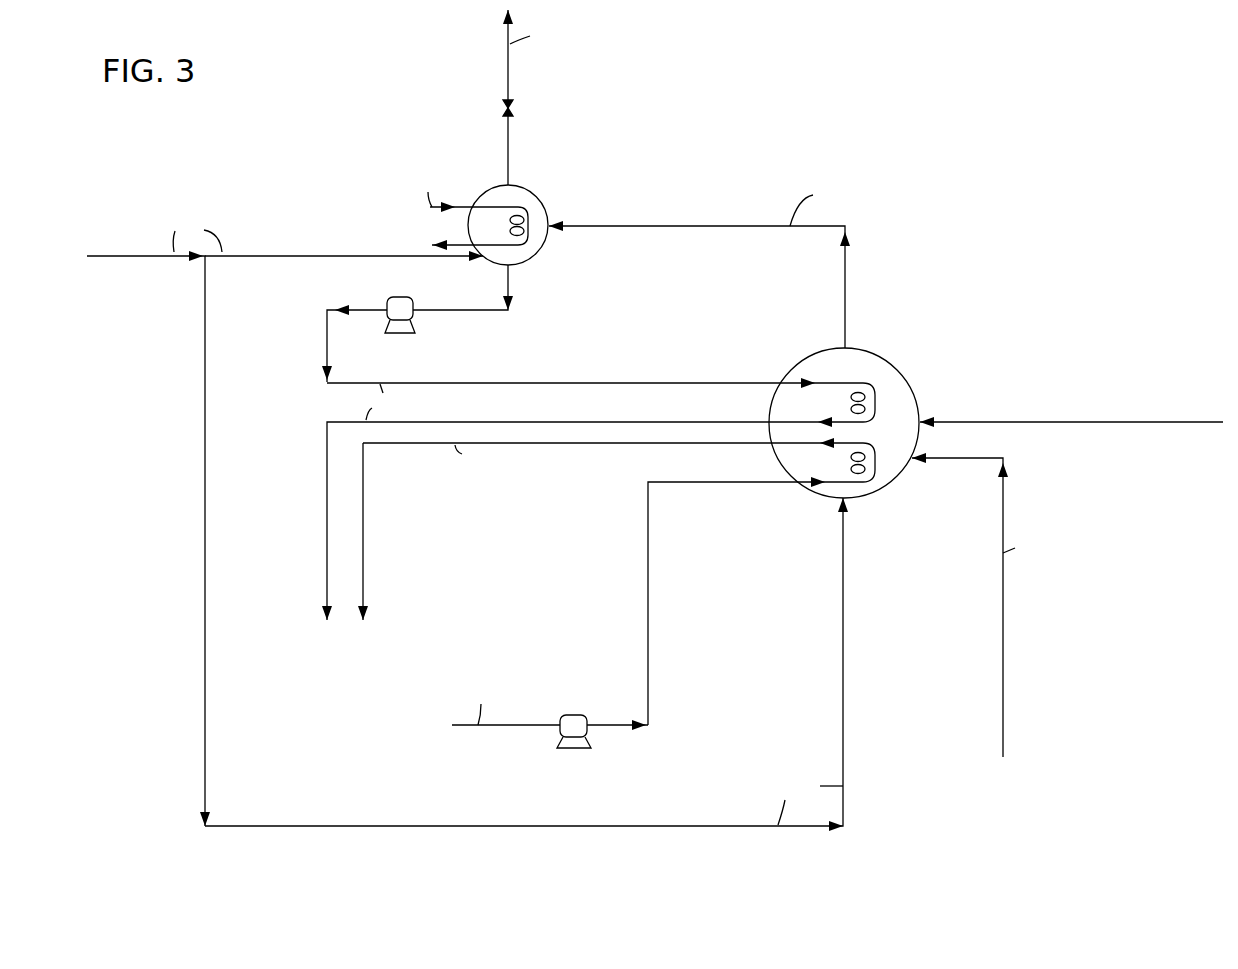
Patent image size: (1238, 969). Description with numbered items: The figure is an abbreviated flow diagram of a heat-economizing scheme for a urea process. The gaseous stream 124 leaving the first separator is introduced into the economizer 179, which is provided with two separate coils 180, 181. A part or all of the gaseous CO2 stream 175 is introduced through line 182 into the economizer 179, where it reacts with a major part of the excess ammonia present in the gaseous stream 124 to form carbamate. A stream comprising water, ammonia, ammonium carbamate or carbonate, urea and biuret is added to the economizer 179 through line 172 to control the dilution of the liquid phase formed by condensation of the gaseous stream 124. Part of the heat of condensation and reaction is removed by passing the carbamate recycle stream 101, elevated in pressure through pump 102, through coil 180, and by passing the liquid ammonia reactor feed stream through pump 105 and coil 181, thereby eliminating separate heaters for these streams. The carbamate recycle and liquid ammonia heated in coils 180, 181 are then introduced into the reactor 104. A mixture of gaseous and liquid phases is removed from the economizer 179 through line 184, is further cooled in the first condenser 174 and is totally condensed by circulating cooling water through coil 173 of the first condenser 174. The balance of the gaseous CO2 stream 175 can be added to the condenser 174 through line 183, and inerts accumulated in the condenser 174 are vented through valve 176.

The carbamate recycle stream 101 is at (508, 285).
The pump 102 is at (415, 334).
The reactor 104 is at (345, 655).
The pump 105 is at (580, 714).
The gaseous stream 124 is at (1003, 590).
The line 172 is at (1062, 420).
The coil 173 is at (500, 210).
The first condenser 174 is at (541, 200).
The gaseous CO2 stream 175 is at (142, 252).
The valve 176 is at (514, 107).
The economizer 179 is at (893, 358).
The coil 180 is at (871, 402).
The coil 181 is at (868, 463).
The line 182 is at (700, 825).
The line 183 is at (344, 252).
The line 184 is at (708, 225).